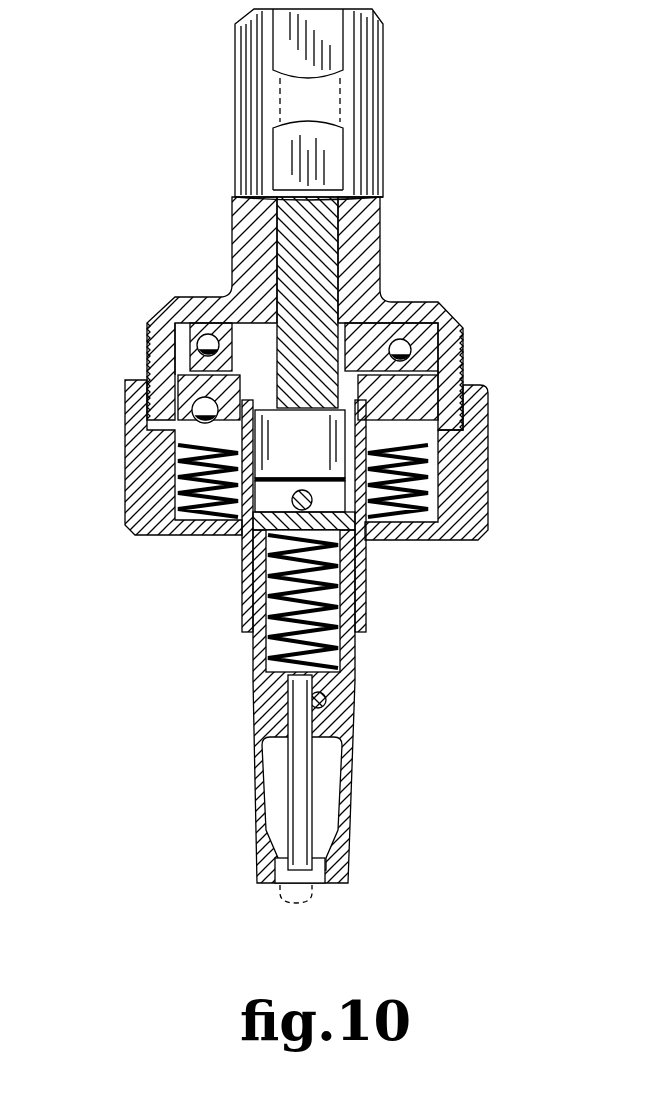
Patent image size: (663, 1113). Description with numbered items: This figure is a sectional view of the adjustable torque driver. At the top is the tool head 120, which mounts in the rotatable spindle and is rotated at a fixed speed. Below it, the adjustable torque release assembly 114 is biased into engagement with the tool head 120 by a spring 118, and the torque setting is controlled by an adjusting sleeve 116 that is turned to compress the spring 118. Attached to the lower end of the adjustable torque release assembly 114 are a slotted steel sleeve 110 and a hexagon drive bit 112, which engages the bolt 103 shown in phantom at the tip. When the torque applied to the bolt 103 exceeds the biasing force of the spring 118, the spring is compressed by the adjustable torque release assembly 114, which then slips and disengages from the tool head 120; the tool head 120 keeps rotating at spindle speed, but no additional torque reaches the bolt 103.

The tool head 120 is at (372, 233).
The spring 118 is at (175, 463).
The adjusting sleeve 116 is at (482, 490).
The adjustable torque release assembly 114 is at (243, 600).
The slotted steel sleeve 110 is at (350, 708).
The hexagon drive bit 112 is at (288, 797).
The bolt 103 is at (316, 897).